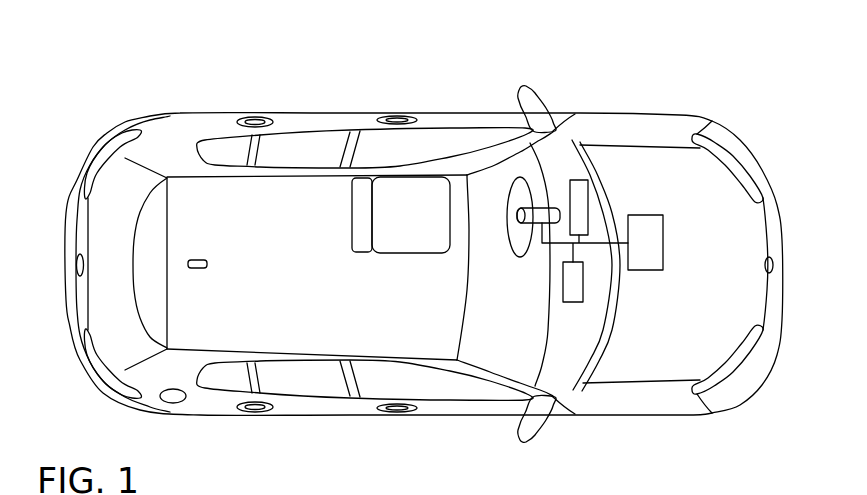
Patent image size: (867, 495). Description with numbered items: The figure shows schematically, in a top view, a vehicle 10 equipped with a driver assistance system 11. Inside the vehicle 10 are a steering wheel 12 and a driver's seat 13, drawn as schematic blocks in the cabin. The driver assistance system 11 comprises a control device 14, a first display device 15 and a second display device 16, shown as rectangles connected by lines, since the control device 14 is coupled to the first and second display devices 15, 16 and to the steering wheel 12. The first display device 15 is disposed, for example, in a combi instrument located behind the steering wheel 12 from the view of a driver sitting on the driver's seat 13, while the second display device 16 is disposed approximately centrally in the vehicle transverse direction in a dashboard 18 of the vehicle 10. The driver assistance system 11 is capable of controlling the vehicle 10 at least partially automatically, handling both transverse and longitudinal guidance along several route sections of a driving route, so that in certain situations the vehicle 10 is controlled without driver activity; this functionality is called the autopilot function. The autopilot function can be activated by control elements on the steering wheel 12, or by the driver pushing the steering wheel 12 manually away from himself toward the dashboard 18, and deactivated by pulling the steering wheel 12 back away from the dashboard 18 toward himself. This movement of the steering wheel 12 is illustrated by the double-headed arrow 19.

The vehicle 10 is at (682, 92).
The driver assistance system 11 is at (642, 285).
The steering wheel 12 is at (512, 243).
The driver's seat 13 is at (408, 251).
The control device 14 is at (663, 247).
The first display device 15 is at (587, 197).
The second display device 16 is at (567, 285).
The dashboard 18 is at (568, 348).
The arrow 19 is at (507, 217).